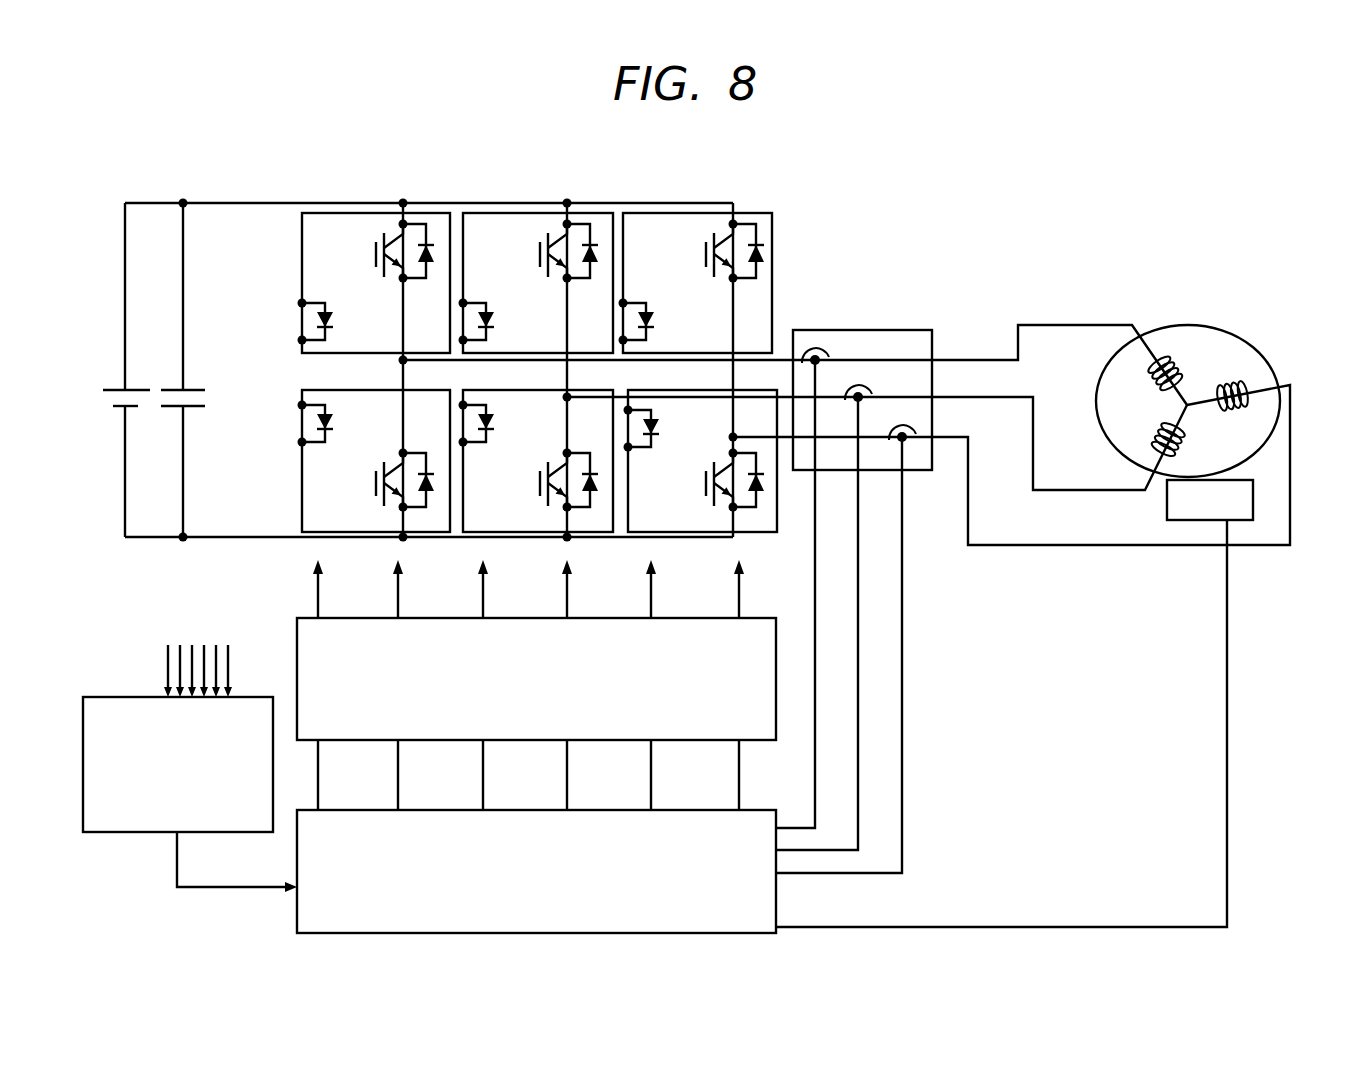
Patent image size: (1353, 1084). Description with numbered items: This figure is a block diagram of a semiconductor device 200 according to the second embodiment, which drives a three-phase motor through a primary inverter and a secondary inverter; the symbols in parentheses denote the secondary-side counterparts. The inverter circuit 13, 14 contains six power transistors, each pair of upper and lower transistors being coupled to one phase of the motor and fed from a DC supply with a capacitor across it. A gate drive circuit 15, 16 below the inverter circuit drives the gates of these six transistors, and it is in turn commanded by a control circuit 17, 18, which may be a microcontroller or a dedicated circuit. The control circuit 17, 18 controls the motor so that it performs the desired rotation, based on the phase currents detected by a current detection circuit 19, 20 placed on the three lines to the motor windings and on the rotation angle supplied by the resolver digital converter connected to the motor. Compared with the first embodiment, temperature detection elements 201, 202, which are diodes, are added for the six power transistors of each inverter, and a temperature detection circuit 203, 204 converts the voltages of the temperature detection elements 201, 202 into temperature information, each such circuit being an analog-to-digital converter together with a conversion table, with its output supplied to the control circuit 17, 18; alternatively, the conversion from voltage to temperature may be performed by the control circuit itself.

The inverter circuit 13 is at (495, 339).
The inverter circuit 14 is at (592, 188).
The semiconductor device 200 is at (904, 165).
The current detection circuit 19 is at (896, 382).
The current detection circuit 20 is at (882, 327).
The temperature detection element 201 is at (273, 373).
The temperature detection element 202 is at (295, 323).
The gate drive circuit 15 is at (536, 685).
The gate drive circuit 16 is at (536, 685).
The control circuit 17 is at (536, 871).
The control circuit 18 is at (536, 871).
The temperature detection circuit 203 is at (188, 780).
The temperature detection circuit 204 is at (170, 835).